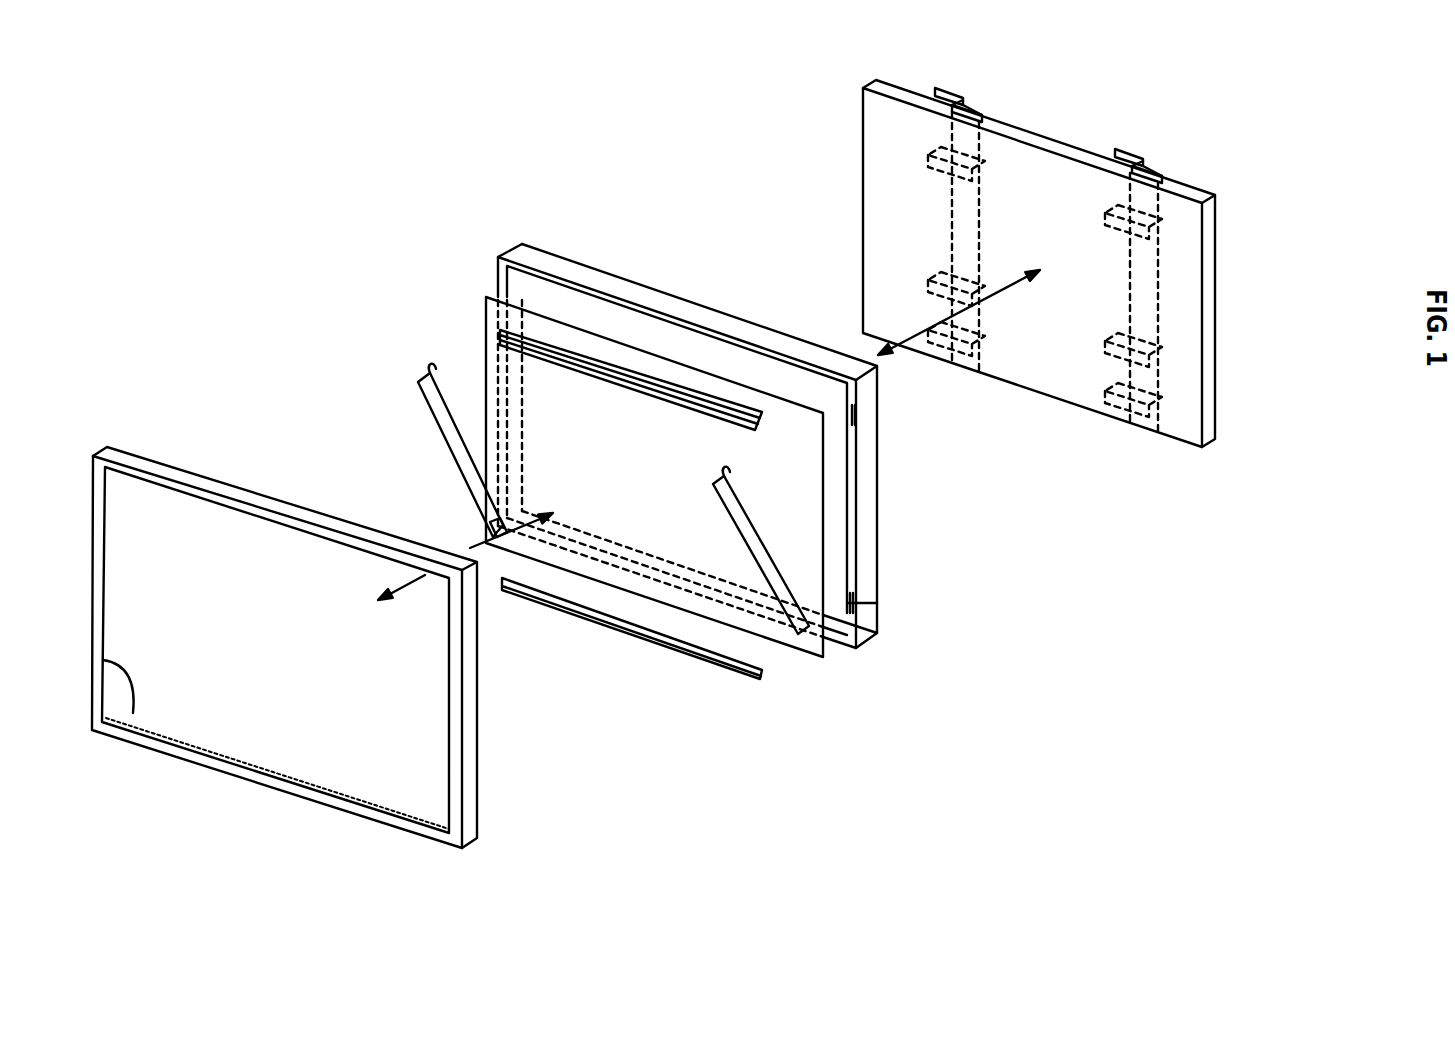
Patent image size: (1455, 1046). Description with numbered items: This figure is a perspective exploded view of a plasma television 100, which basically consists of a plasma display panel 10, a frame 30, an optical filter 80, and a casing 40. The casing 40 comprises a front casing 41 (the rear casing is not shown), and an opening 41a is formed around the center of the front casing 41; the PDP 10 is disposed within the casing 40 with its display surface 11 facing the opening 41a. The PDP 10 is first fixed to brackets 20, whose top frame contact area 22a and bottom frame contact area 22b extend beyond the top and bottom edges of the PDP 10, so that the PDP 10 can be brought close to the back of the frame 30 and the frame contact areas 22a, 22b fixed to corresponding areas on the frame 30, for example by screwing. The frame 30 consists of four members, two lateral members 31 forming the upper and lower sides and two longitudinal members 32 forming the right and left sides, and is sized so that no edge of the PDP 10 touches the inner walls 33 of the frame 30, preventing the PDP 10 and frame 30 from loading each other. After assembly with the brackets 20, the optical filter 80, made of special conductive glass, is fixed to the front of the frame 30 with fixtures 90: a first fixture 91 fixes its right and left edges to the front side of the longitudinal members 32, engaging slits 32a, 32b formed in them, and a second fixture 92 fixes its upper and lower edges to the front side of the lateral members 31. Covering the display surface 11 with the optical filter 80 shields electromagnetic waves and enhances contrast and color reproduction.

The plasma television 100 is at (275, 295).
The plasma display panel 10 is at (1212, 350).
The display surface 11 is at (882, 210).
The bracket 20 is at (985, 108).
The top frame contact area 22a is at (958, 90).
The bottom frame contact area 22b is at (973, 366).
The frame 30 is at (877, 510).
The lateral member 31 is at (597, 273).
The longitudinal member 32 is at (497, 283).
The slit 32a is at (858, 603).
The slit 32b is at (856, 425).
The inner wall 33 is at (520, 278).
The optical filter 80 is at (485, 370).
The fixture 90 is at (588, 493).
The first fixture 91 is at (425, 372).
The second fixture 92 is at (657, 382).
The casing 40 is at (478, 770).
The front casing 41 is at (284, 647).
The opening 41a is at (133, 713).